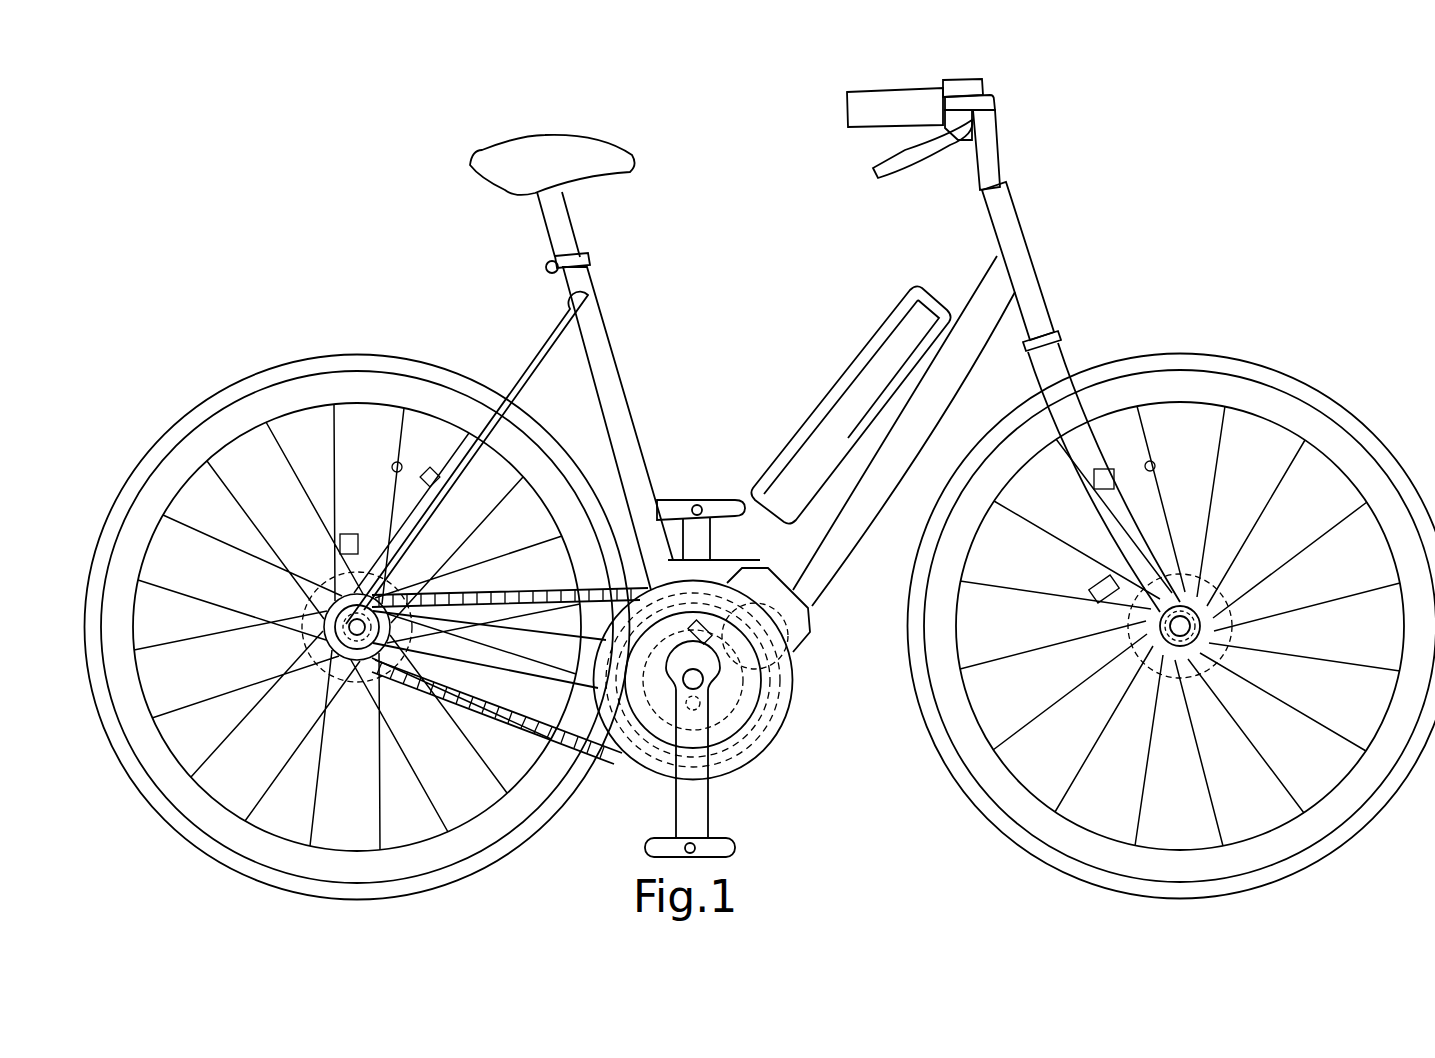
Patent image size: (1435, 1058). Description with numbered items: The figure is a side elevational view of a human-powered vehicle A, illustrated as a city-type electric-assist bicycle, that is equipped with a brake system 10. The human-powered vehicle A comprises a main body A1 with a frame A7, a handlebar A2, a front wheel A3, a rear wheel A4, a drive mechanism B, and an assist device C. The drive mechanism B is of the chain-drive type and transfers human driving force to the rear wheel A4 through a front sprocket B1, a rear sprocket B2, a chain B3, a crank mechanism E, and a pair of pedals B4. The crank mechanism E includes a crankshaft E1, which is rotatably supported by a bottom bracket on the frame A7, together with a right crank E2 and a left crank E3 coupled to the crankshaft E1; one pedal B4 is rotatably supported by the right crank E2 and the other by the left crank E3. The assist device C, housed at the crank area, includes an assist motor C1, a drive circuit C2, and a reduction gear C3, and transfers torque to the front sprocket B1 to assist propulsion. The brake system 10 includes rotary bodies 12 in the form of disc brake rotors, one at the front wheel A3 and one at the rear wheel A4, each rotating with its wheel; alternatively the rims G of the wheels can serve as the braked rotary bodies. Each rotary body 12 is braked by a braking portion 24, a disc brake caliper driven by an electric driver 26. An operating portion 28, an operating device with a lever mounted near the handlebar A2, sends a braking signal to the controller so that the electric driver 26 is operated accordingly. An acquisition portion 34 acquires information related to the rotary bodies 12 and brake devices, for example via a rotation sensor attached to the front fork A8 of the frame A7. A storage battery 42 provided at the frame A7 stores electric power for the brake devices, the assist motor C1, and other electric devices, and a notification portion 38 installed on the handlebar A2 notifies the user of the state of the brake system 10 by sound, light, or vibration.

The brake system 10 is at (1168, 226).
The rotary body 12 is at (300, 640).
The braking portion 24 is at (330, 570).
The electric driver 26 is at (350, 534).
The operating portion 28 is at (917, 160).
The acquisition portion 34 is at (428, 470).
The notification portion 38 is at (962, 80).
The storage battery 42 is at (830, 384).
The human-powered vehicle A is at (1122, 76).
The main body A1 is at (618, 344).
The handlebar A2 is at (876, 92).
The front wheel A3 is at (1242, 358).
The rear wheel A4 is at (300, 356).
The frame A7 is at (844, 526).
The front fork A8 is at (1083, 488).
The drive mechanism B is at (786, 837).
The front sprocket B1 is at (642, 762).
The rear sprocket B2 is at (330, 690).
The chain B3 is at (450, 706).
The pedal B4 is at (706, 500).
The assist device C is at (804, 600).
The assist motor C1 is at (806, 634).
The drive circuit C2 is at (628, 658).
The reduction gear C3 is at (780, 662).
The crank mechanism E is at (817, 739).
The crankshaft E1 is at (708, 678).
The right crank E2 is at (706, 806).
The left crank E3 is at (712, 545).
The rim G is at (216, 405).